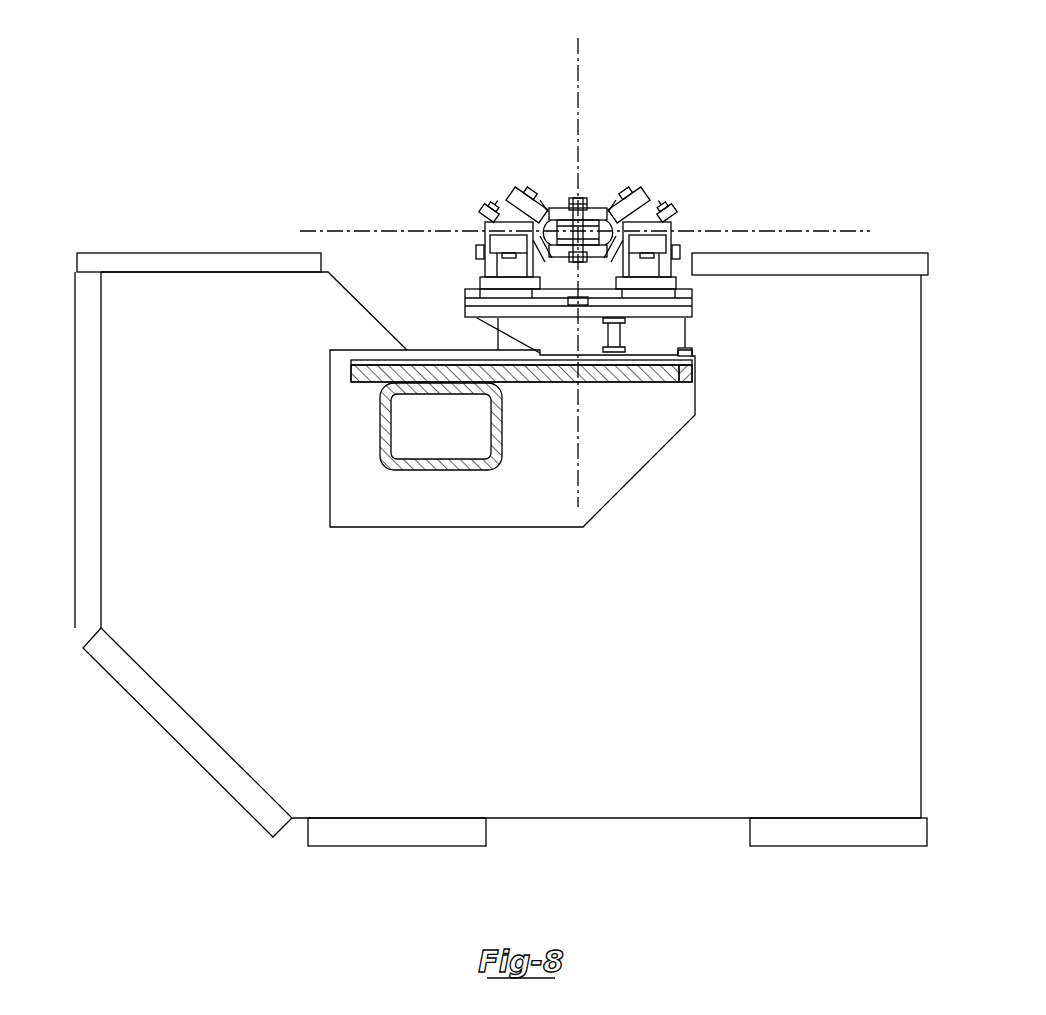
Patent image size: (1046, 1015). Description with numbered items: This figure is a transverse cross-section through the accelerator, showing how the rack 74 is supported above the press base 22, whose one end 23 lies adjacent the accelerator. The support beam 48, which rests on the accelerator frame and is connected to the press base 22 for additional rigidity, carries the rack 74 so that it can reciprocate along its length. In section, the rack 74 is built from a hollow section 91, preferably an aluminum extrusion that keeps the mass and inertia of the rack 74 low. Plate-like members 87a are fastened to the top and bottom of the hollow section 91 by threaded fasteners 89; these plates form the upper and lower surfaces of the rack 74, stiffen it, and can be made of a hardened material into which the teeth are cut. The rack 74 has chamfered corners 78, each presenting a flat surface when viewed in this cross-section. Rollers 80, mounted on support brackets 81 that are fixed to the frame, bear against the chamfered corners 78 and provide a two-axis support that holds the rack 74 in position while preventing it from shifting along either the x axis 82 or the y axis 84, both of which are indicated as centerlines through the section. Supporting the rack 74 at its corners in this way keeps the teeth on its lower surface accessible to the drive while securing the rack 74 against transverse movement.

The press base 22 is at (942, 507).
The end of the press base 23 is at (902, 467).
The support beam 48 is at (383, 430).
The rack 74 is at (605, 200).
The chamfered corners 78 is at (538, 197).
The rollers 80 is at (518, 197).
The support brackets 81 is at (486, 276).
The x axis 82 is at (342, 231).
The y axis 84 is at (578, 53).
The plate-like members 87a is at (563, 197).
The threaded fasteners 89 is at (580, 197).
The hollow section 91 is at (622, 198).